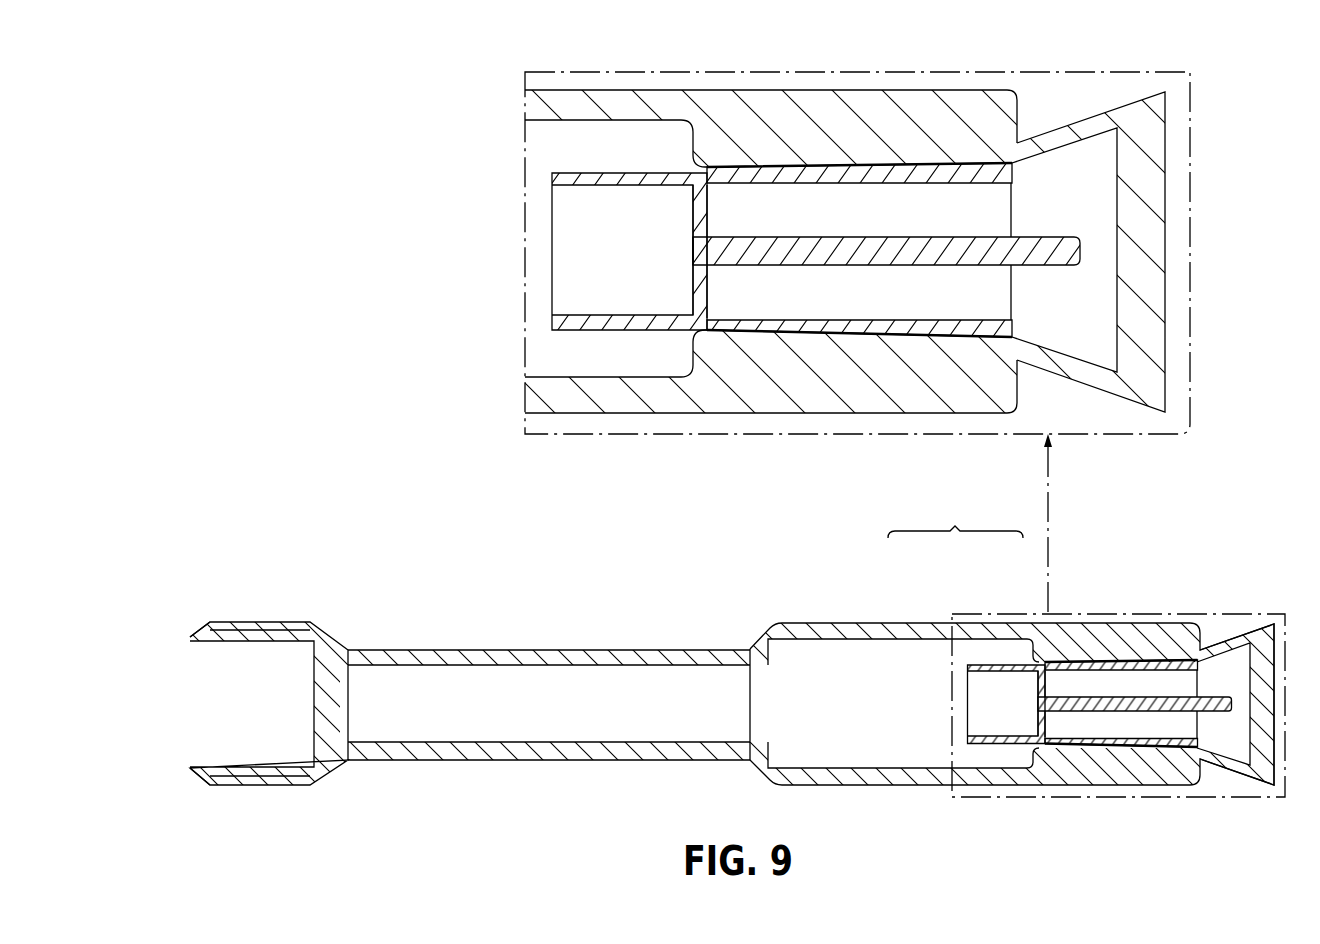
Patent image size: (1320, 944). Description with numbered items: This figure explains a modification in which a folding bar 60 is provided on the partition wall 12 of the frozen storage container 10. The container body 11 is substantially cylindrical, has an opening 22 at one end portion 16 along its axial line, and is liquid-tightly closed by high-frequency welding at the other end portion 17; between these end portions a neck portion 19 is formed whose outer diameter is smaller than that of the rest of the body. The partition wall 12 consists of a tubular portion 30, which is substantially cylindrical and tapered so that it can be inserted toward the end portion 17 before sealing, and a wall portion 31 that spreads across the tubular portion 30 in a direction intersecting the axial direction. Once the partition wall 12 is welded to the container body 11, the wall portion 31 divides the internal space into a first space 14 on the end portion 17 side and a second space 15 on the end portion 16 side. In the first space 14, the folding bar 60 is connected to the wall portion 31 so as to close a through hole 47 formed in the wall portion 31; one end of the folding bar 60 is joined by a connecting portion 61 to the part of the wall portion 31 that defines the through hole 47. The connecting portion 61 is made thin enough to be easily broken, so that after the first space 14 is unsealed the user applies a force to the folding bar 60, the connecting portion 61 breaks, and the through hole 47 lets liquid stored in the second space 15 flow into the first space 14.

The frozen storage container 10 is at (955, 514).
The container body 11 is at (733, 413).
The partition wall 12 is at (838, 167).
The first space 14 is at (857, 306).
The second space 15 is at (572, 259).
The end portion 16 is at (190, 637).
The end portion 17 is at (1167, 252).
The neck portion 19 is at (543, 650).
The opening 22 is at (185, 704).
The tubular portion 30 is at (653, 173).
The wall portion 31 is at (693, 210).
The through hole 47 is at (686, 251).
The folding bar 60 is at (865, 240).
The connecting portion 61 is at (707, 238).